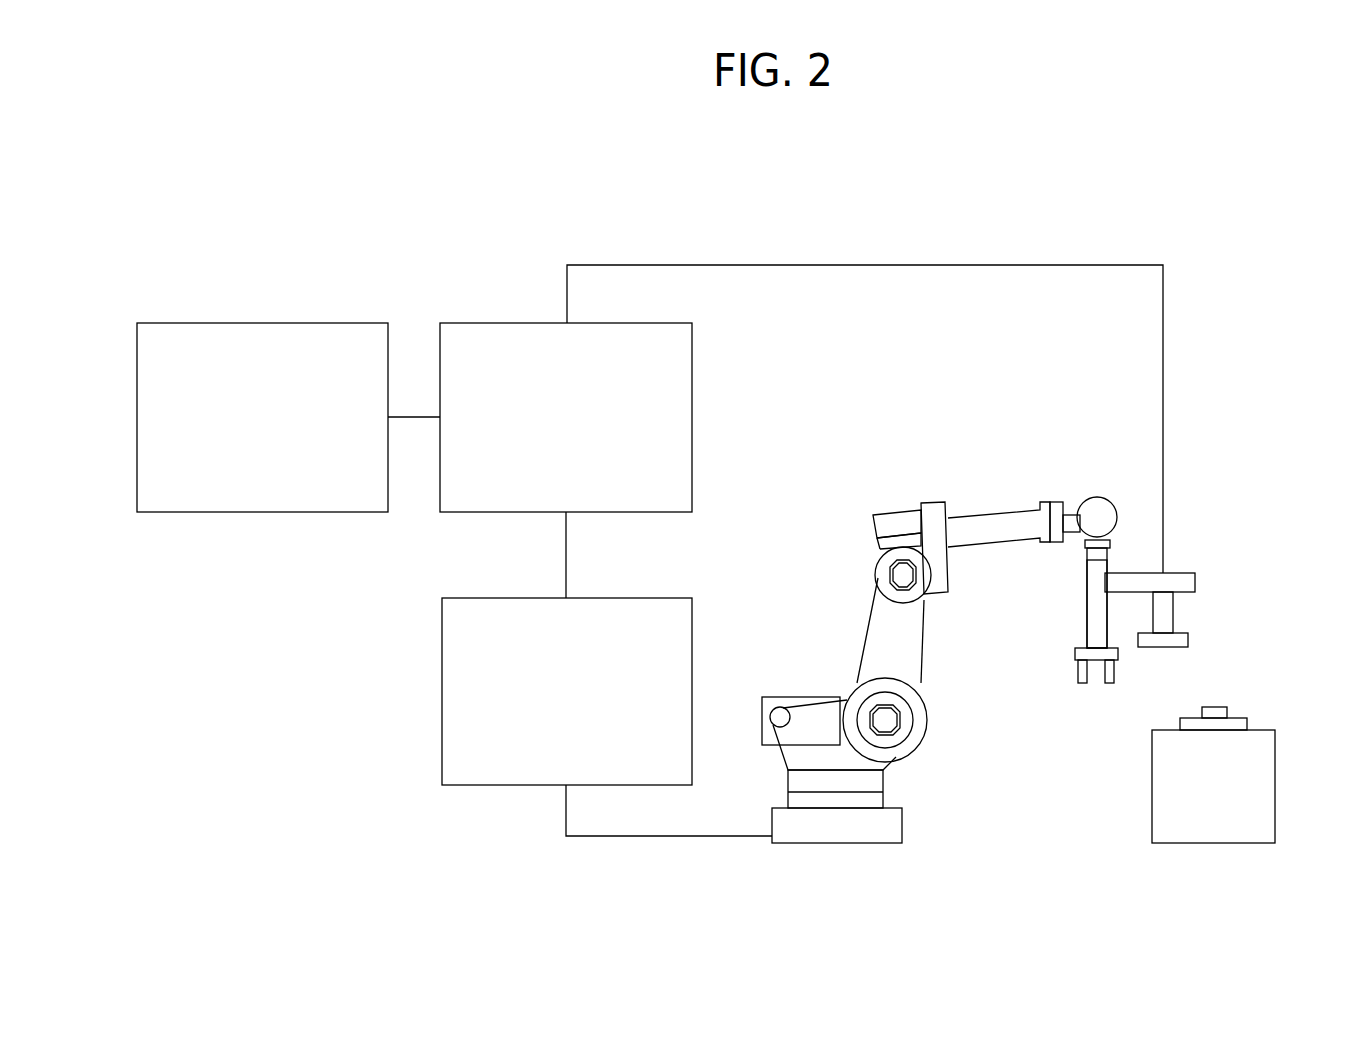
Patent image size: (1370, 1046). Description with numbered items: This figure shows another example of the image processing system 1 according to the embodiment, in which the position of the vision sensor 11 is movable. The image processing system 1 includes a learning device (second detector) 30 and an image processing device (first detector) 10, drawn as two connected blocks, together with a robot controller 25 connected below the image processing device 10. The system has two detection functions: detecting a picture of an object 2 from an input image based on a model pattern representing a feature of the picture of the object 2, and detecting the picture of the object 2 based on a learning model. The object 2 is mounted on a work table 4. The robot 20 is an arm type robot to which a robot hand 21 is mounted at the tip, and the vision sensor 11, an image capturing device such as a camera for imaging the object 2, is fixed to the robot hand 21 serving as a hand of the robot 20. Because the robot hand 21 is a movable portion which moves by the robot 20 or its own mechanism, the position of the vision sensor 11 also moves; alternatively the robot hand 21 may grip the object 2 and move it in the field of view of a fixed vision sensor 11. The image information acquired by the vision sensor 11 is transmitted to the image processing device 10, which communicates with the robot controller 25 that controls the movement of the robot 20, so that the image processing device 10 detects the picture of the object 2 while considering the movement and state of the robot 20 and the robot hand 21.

The image processing system 1 is at (402, 197).
The learning device (second detector) 30 is at (188, 322).
The image processing device (first detector) 10 is at (492, 322).
The robot controller 25 is at (479, 597).
The robot 20 is at (825, 697).
The robot hand 21 is at (1092, 618).
The vision sensor 11 is at (1172, 613).
The object 2 is at (1240, 718).
The work table 4 is at (1275, 783).